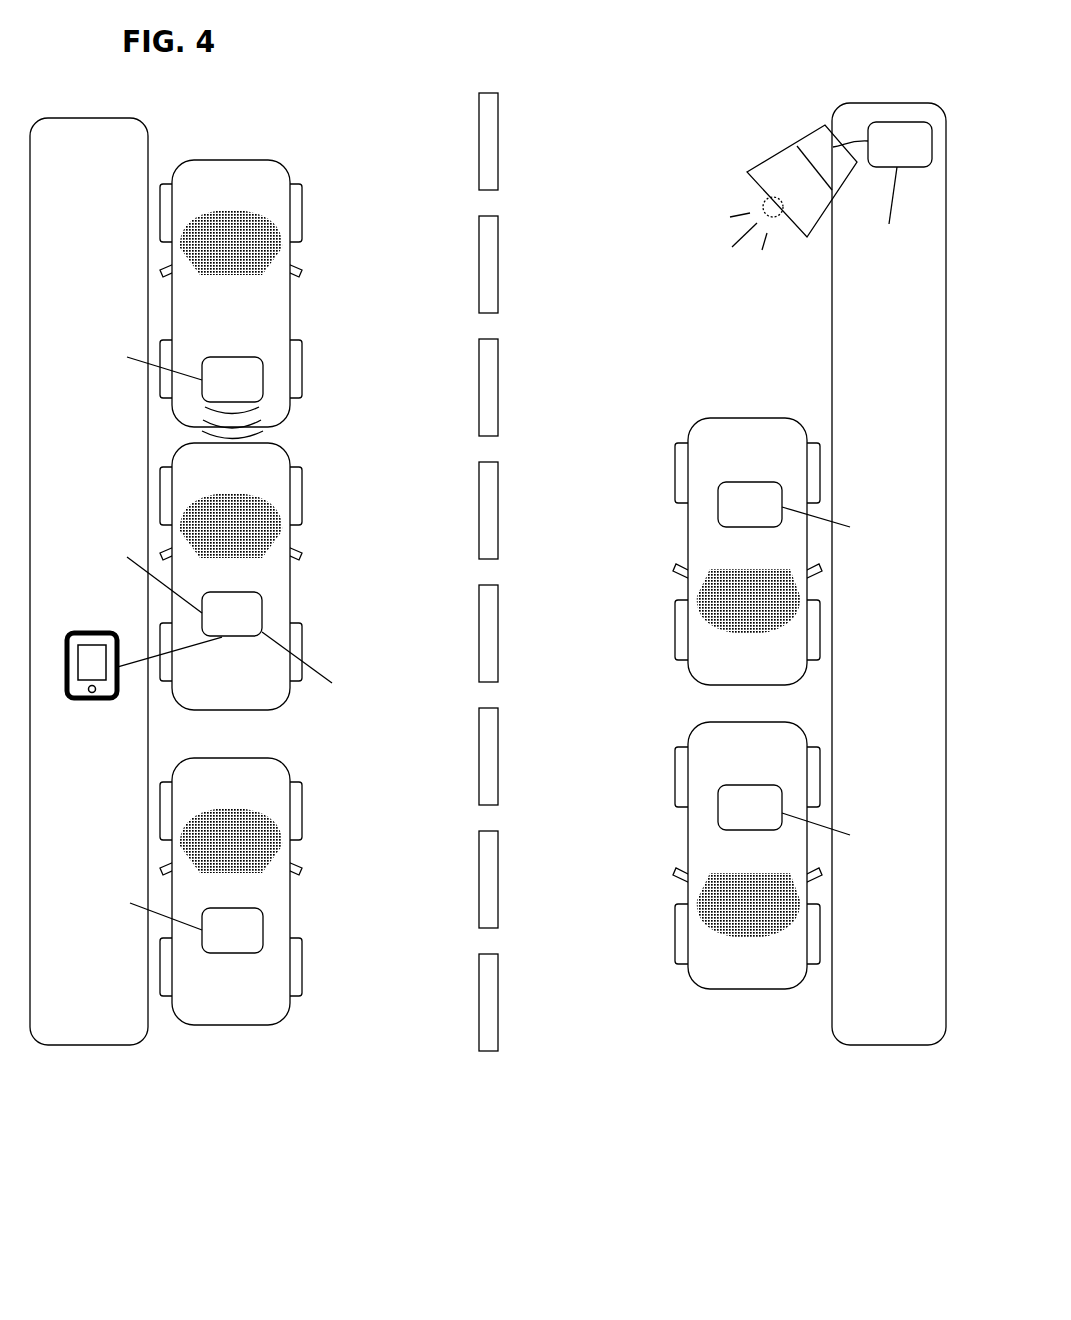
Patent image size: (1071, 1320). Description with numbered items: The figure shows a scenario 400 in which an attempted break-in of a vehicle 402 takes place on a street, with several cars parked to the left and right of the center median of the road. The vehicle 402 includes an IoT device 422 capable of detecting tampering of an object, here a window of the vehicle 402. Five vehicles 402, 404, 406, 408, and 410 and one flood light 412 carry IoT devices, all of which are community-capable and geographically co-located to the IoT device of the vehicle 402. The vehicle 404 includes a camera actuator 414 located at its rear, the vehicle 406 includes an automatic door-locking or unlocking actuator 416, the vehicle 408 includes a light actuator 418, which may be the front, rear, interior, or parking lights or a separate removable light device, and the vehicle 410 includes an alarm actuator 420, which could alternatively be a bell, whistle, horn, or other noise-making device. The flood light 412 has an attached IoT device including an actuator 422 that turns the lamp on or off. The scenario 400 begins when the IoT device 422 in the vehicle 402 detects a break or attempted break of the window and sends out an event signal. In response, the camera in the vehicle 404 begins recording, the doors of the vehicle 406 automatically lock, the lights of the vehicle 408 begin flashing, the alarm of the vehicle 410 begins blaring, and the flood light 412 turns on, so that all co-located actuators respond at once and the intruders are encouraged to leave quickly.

The scenario 400 is at (521, 1211).
The vehicle 402 is at (302, 631).
The vehicle 404 is at (302, 352).
The vehicle 406 is at (302, 950).
The vehicle 408 is at (677, 618).
The vehicle 410 is at (677, 923).
The flood light 412 is at (778, 162).
The camera actuator 414 is at (232, 398).
The automatic door-locking or unlocking actuator 416 is at (232, 930).
The light actuator 418 is at (750, 504).
The alarm actuator 420 is at (750, 807).
The IoT device / actuator 422 is at (567, 379).